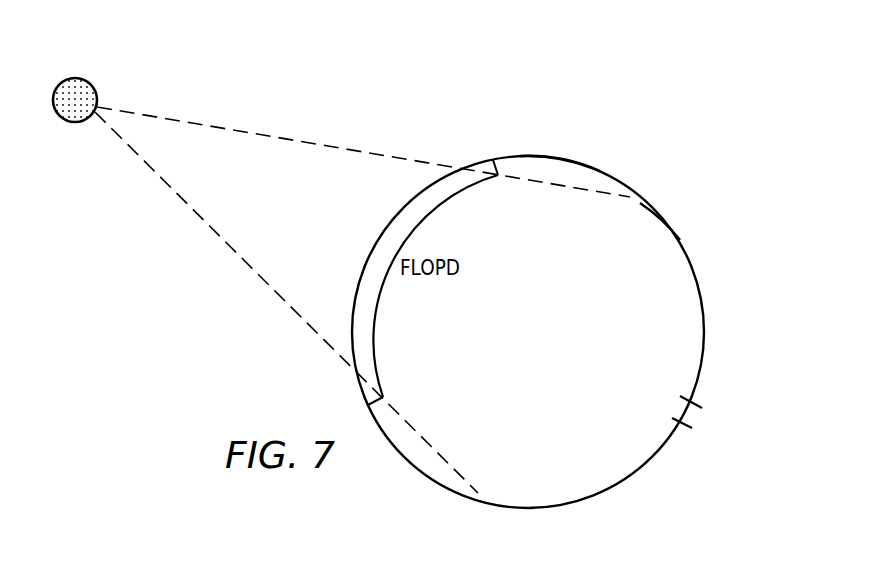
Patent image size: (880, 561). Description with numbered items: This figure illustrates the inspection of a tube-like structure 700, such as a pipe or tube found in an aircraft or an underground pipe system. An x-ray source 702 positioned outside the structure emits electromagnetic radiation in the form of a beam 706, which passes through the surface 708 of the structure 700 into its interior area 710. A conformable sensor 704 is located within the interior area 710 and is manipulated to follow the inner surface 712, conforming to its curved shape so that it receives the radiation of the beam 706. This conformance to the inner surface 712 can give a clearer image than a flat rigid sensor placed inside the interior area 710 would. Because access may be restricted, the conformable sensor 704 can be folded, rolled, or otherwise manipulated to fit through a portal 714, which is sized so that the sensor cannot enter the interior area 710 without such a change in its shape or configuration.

The structure 700 is at (683, 88).
The x-ray source 702 is at (73, 78).
The conformable sensor 704 is at (378, 356).
The beam 706 is at (258, 135).
The surface 708 is at (556, 156).
The interior area 710 is at (549, 347).
The inner surface 712 is at (665, 222).
The portal 714 is at (688, 410).